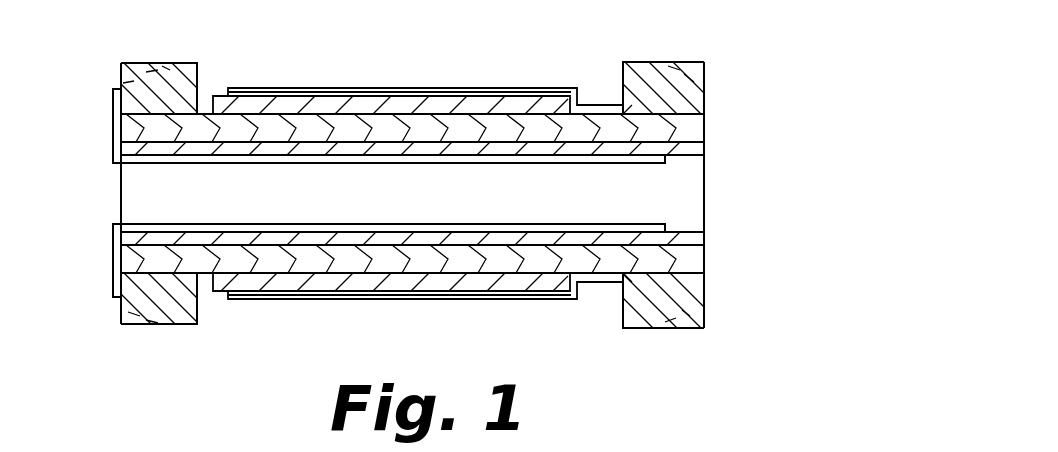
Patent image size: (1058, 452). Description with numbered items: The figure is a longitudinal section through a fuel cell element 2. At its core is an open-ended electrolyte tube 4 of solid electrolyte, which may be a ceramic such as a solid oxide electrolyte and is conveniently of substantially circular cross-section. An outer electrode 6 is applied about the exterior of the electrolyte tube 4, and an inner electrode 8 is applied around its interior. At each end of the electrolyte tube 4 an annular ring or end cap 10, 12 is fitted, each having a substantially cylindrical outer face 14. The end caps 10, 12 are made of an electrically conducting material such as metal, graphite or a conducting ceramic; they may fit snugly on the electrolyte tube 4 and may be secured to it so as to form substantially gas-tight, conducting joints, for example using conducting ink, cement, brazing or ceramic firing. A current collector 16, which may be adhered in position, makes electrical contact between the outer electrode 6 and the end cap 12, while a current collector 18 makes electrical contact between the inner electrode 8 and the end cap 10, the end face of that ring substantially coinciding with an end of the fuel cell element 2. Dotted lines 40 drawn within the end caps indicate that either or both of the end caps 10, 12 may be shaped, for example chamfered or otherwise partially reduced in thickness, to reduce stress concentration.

The fuel cell element 2 is at (480, 53).
The electrolyte tube 4 is at (202, 130).
The outer electrode 6 is at (507, 101).
The inner electrode 8 is at (678, 150).
The end cap 10 is at (185, 316).
The end cap 12 is at (683, 96).
The cylindrical outer face 14 is at (180, 63).
The current collector 16 is at (362, 88).
The current collector 18 is at (565, 160).
The dotted lines 40 is at (143, 72).